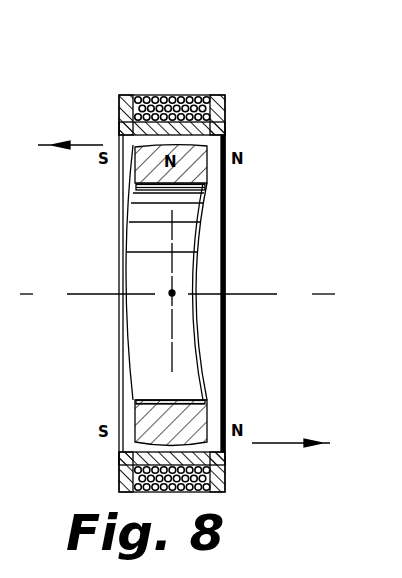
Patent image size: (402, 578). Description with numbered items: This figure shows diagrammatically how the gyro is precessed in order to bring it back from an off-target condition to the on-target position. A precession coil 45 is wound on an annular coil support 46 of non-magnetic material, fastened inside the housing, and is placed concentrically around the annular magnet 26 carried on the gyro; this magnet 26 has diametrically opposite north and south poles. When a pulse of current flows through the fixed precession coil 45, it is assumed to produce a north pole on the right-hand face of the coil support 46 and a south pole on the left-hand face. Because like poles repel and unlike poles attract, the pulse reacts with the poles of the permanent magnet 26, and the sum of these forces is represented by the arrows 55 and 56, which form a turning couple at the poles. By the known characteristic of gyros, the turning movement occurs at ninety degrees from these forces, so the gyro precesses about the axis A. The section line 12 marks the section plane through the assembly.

The section line 12 is at (177, 297).
The annular magnet 26 is at (133, 411).
The precession coil 45 is at (158, 98).
The annular coil support 46 is at (126, 101).
The arrow 55 is at (75, 143).
The arrow 56 is at (257, 444).
The axis A is at (175, 291).